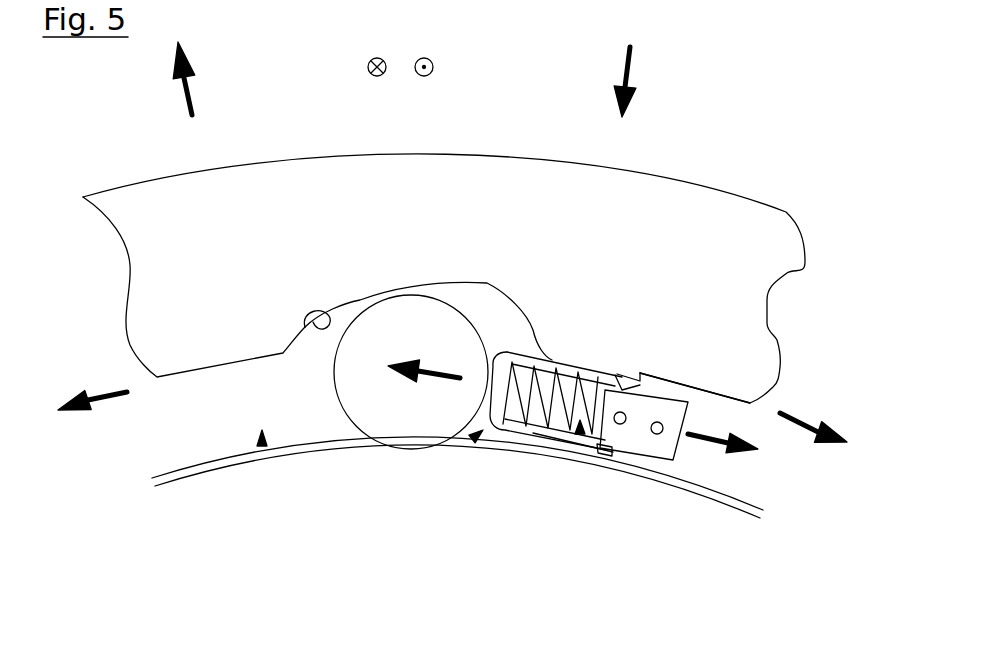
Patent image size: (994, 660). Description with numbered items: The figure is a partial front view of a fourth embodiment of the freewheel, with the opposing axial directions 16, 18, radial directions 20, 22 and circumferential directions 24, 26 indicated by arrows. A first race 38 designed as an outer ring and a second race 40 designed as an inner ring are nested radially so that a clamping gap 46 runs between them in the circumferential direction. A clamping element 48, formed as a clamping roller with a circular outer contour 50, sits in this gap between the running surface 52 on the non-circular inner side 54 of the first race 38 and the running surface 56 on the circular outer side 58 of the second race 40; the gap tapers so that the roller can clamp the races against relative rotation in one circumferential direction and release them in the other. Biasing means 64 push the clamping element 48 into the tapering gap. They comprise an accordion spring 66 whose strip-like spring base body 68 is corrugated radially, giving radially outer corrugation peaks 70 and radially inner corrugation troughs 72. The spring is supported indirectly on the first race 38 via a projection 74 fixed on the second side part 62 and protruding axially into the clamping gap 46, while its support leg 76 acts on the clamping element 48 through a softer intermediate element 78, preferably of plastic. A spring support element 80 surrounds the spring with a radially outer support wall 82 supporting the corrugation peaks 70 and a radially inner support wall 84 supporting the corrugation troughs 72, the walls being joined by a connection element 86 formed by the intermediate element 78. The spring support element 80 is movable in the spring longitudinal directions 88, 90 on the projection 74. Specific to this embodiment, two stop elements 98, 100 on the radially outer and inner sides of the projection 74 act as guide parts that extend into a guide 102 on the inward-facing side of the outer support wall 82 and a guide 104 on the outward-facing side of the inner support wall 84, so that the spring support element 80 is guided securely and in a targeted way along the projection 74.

The axial direction 16 is at (433, 68).
The axial direction 18 is at (367, 67).
The radial direction 20 is at (185, 93).
The radial direction 22 is at (632, 70).
The circumferential direction 24 is at (802, 432).
The circumferential direction 26 is at (107, 402).
The first race 38 is at (168, 213).
The second race 40 is at (208, 488).
The clamping gap 46 is at (262, 446).
The clamping element 48 is at (407, 412).
The outer contour 50 is at (342, 423).
The running surface 52 is at (307, 322).
The inner side 54 is at (178, 387).
The running surface 56 is at (137, 349).
The outer side 58 is at (228, 452).
The second side part 62 is at (202, 440).
The biasing means 64 is at (472, 439).
The accordion spring 66 is at (580, 434).
The spring base body 68 is at (568, 432).
The corrugation peaks 70 is at (610, 405).
The corrugation troughs 72 is at (560, 380).
The projection 74 is at (635, 442).
The support leg 76 is at (533, 350).
The intermediate element 78 is at (428, 239).
The spring support element 80 is at (648, 366).
The outer support wall 82 is at (632, 375).
The inner support wall 84 is at (612, 452).
The connection element 86 is at (497, 350).
The spring longitudinal direction 88 is at (717, 445).
The spring longitudinal direction 90 is at (437, 368).
The stop element 98 is at (620, 370).
The stop element 100 is at (603, 455).
The guide 102 is at (603, 365).
The guide 104 is at (598, 455).